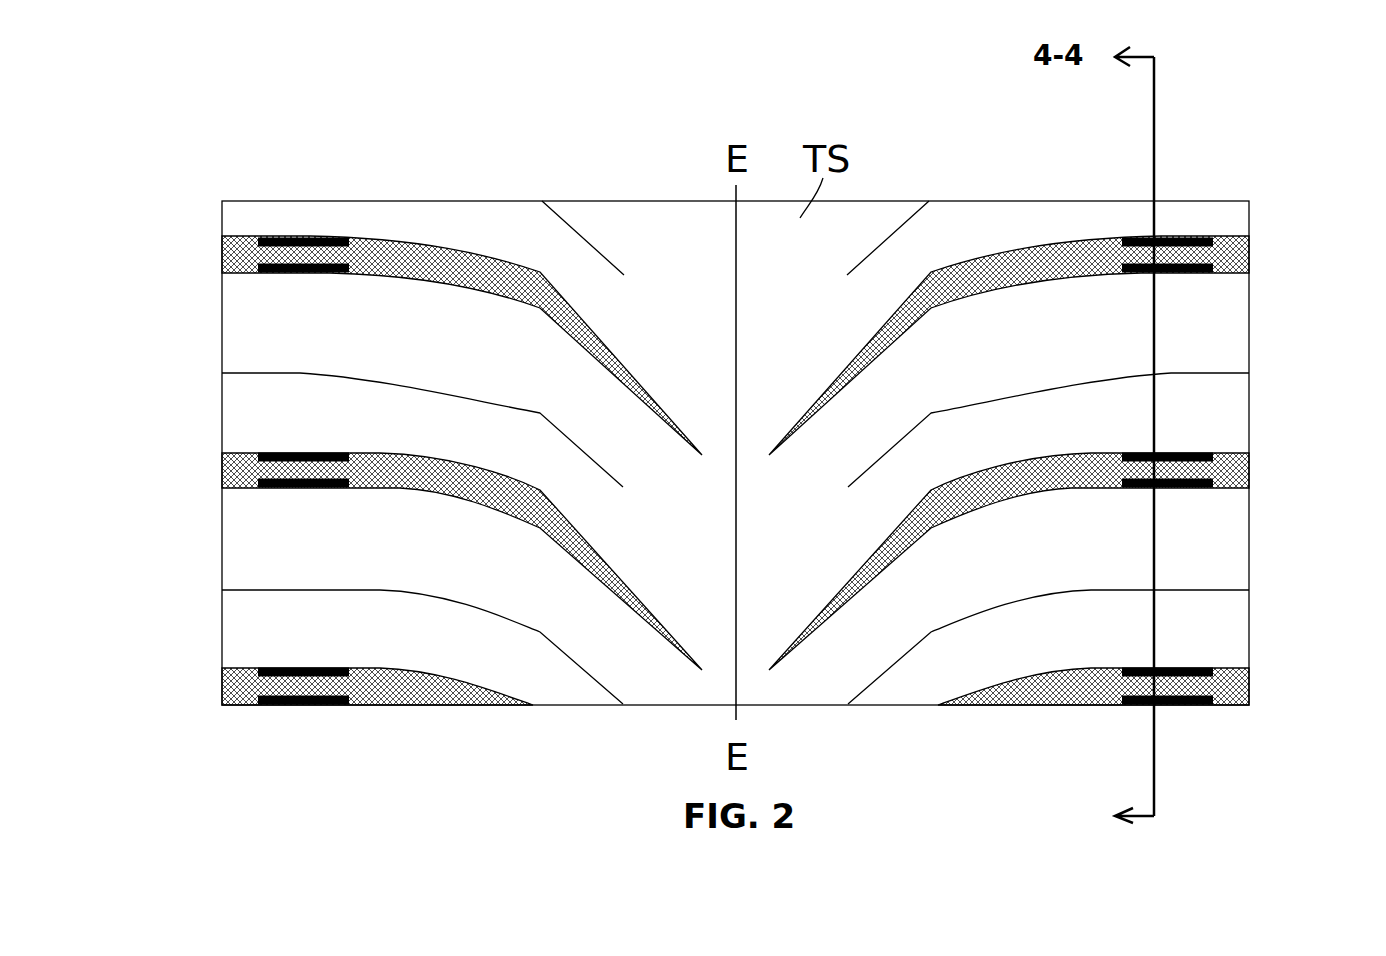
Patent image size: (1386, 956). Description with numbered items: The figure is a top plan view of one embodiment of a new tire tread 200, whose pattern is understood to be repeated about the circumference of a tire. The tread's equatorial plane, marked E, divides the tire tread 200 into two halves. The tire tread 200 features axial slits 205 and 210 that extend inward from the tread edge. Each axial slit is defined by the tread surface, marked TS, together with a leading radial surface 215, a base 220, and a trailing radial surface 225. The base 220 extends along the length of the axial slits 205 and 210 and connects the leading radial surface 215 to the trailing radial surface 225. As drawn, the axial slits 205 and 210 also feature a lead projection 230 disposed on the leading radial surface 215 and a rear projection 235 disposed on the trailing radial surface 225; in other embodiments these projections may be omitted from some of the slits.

The tire tread 200 is at (258, 115).
The axial slit 205 is at (223, 253).
The axial slit 210 is at (267, 377).
The leading radial surface 215 is at (277, 277).
The base 220 is at (287, 237).
The trailing radial surface 225 is at (307, 237).
The lead projection 230 is at (1178, 277).
The rear projection 235 is at (1175, 233).